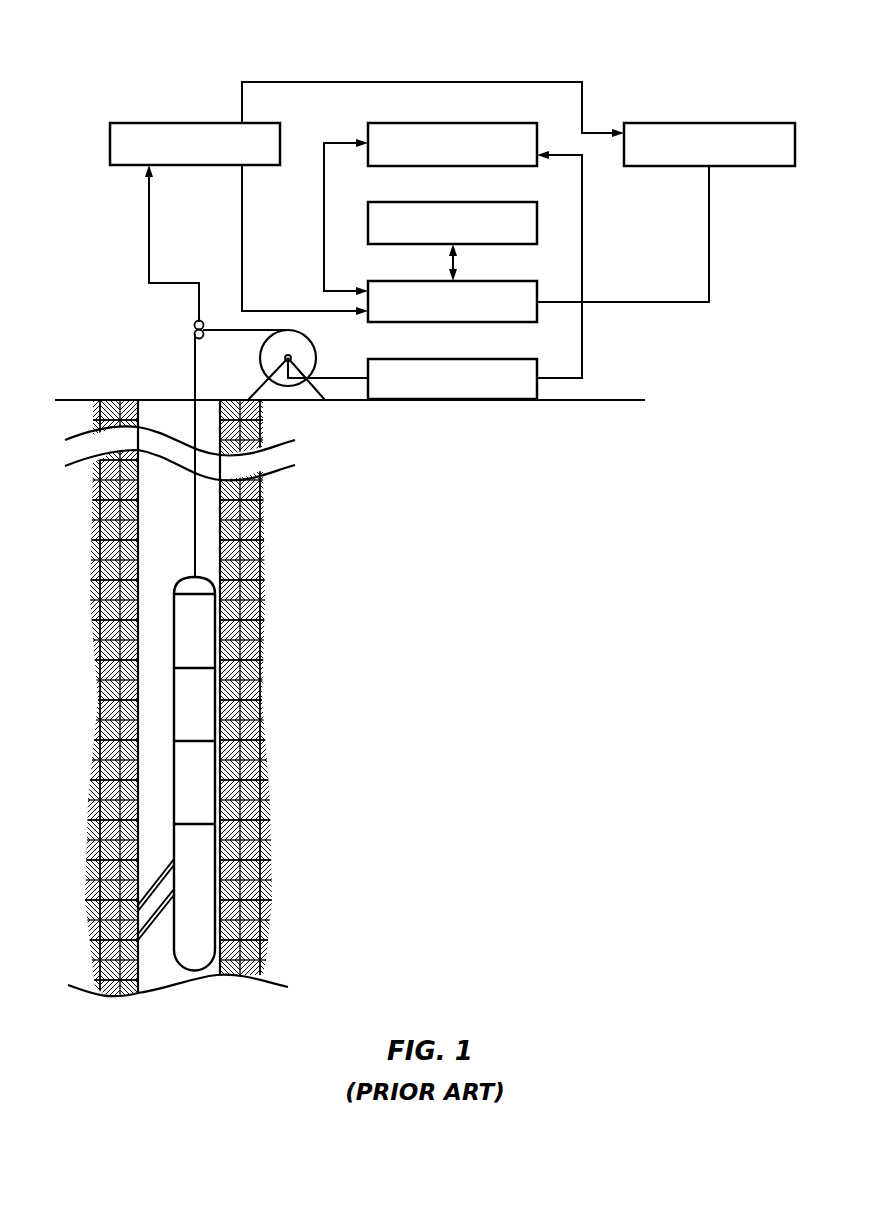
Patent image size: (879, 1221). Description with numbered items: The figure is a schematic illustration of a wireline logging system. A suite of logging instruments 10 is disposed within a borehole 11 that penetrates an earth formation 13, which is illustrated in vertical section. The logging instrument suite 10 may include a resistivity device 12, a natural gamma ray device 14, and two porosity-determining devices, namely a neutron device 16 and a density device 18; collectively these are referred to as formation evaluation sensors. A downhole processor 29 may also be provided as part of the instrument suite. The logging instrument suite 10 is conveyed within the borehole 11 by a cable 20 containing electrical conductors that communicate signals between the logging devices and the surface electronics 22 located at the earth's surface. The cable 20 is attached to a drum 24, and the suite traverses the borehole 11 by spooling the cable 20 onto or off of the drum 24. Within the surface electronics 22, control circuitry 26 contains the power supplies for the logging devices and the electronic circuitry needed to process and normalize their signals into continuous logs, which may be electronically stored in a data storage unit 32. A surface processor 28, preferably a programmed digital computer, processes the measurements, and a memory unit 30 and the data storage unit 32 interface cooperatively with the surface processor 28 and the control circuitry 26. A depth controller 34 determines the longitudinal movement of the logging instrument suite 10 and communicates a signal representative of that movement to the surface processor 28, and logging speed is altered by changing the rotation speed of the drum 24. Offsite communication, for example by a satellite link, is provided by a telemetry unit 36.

The logging instrument suite 10 is at (226, 759).
The borehole 11 is at (213, 562).
The resistivity device 12 is at (205, 632).
The earth formation 13 is at (203, 512).
The natural gamma ray device 14 is at (205, 692).
The neutron device 16 is at (205, 774).
The density device 18 is at (203, 890).
The cable 20 is at (195, 540).
The surface electronics 22 is at (126, 50).
The drum 24 is at (262, 356).
The control circuitry 26 is at (413, 359).
The surface processor 28 is at (413, 281).
The downhole processor 29 is at (220, 587).
The memory unit 30 is at (413, 202).
The data storage unit 32 is at (413, 123).
The depth controller 34 is at (156, 123).
The telemetry unit 36 is at (671, 123).